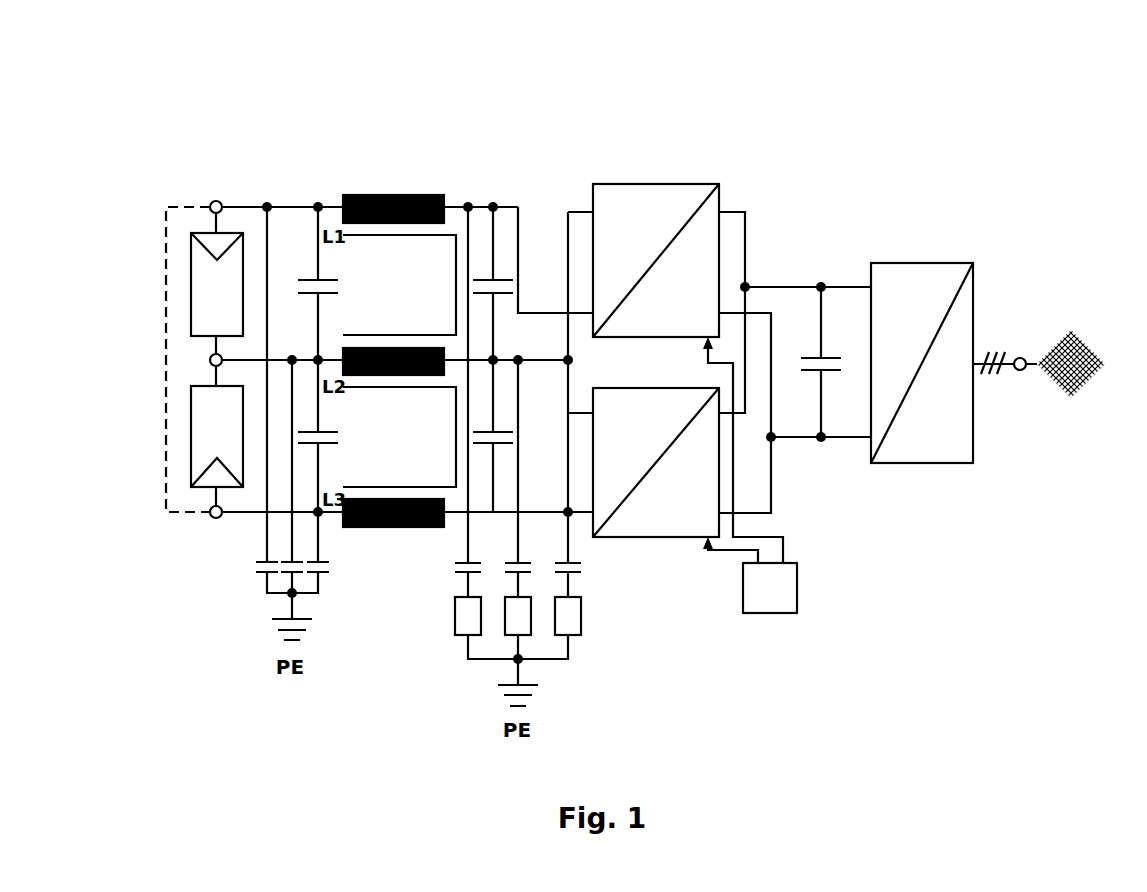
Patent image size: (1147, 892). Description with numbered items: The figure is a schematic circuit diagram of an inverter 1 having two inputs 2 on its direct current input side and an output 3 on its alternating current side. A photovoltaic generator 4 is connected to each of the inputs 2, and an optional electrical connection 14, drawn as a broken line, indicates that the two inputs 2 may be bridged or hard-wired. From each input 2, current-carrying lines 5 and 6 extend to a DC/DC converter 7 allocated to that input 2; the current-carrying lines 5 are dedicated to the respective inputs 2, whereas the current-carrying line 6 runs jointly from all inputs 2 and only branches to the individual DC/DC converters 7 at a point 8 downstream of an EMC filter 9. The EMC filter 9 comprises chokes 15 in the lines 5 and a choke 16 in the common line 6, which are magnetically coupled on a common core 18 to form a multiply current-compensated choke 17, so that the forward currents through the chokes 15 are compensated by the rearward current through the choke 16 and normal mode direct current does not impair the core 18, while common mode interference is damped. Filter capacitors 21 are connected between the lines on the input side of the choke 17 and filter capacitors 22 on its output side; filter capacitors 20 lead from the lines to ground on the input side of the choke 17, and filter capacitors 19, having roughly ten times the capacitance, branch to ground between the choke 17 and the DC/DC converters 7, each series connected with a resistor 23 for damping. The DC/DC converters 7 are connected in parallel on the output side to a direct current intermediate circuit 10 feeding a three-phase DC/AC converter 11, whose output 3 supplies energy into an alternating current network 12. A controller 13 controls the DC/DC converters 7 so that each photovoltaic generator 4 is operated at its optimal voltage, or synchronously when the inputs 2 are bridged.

The inverter 1 is at (780, 150).
The inputs 2 is at (213, 202).
The output 3 is at (1023, 335).
The photovoltaic generator 4 is at (233, 232).
The current-carrying lines 5 is at (288, 206).
The current-carrying line 6 is at (256, 363).
The DC/DC converter 7 is at (642, 183).
The point 8 is at (573, 360).
The EMC filter 9 is at (409, 168).
The direct current intermediate circuit 10 is at (827, 263).
The DC/AC converter 11 is at (946, 465).
The alternating current network 12 is at (1086, 345).
The controller 13 is at (778, 615).
The optional electrical connection 14 is at (163, 516).
The chokes 15 is at (436, 194).
The choke 16 is at (422, 347).
The multiply current-compensated choke 17 is at (375, 184).
The common core 18 is at (375, 333).
The filter capacitors 19 is at (457, 572).
The filter capacitors 20 is at (263, 576).
The filter capacitors 21 is at (310, 278).
The filter capacitors 22 is at (502, 279).
The resistors 23 is at (460, 637).